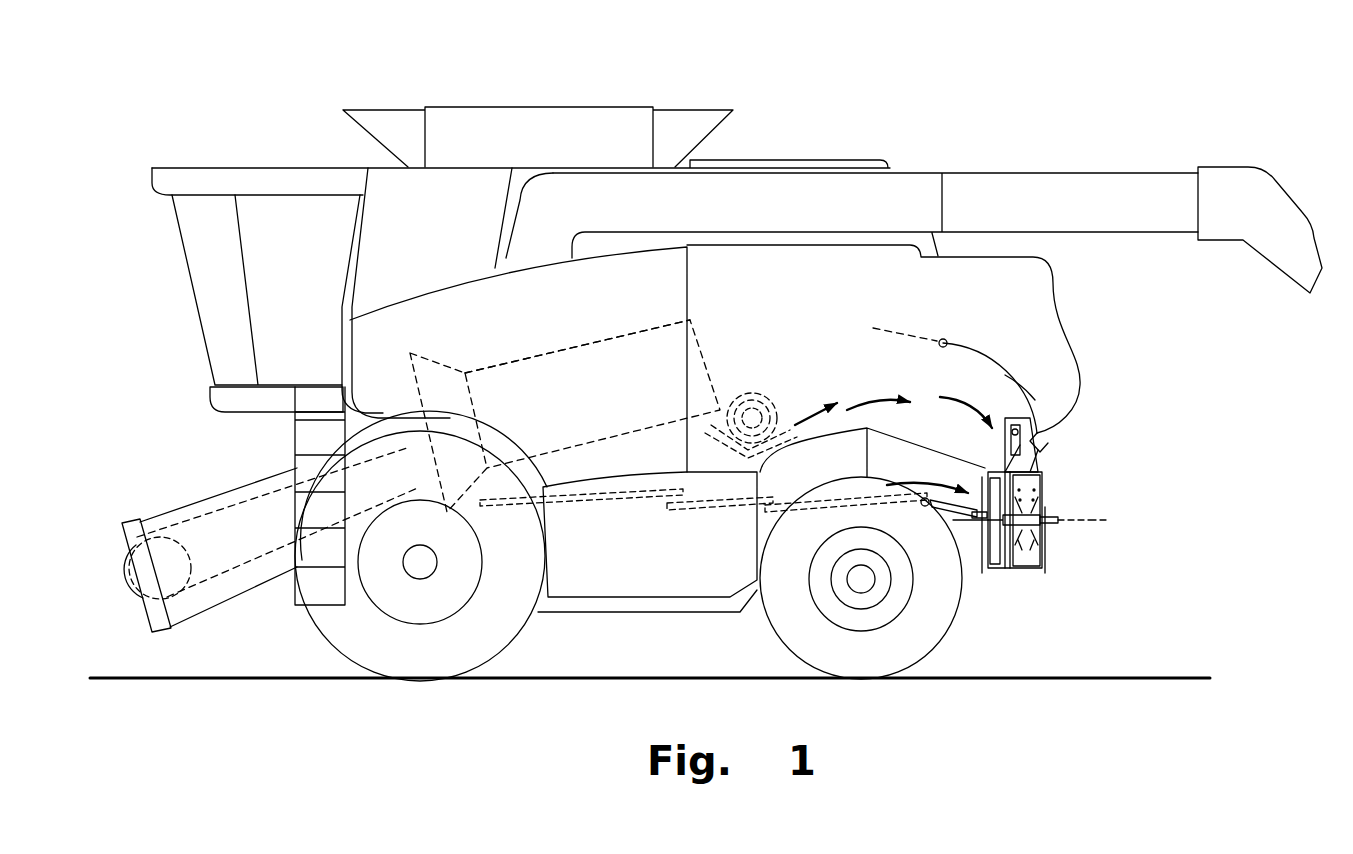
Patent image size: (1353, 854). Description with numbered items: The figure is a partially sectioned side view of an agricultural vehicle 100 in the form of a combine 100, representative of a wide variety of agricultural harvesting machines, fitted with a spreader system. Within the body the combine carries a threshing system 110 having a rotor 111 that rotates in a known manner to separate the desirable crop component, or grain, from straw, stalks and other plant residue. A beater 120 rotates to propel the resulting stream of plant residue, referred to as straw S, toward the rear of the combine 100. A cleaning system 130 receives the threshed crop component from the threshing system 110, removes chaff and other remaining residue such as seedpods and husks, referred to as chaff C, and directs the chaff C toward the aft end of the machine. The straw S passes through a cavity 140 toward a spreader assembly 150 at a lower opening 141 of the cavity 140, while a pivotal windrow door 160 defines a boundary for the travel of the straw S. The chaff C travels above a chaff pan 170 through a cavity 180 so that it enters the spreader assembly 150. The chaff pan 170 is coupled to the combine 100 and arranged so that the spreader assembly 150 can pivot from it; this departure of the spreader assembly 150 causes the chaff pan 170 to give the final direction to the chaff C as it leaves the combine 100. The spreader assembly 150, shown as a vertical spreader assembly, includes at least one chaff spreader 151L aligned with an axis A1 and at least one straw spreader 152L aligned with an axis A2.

The agricultural vehicle 100 is at (1020, 132).
The threshing system 110 is at (505, 352).
The rotor 111 is at (552, 358).
The beater 120 is at (745, 397).
The cleaning system 130 is at (740, 518).
The cavity 140 is at (903, 357).
The lower opening 141 is at (1018, 410).
The spreader assembly 150 is at (1065, 476).
The chaff spreader 151L is at (1001, 568).
The straw spreader 152L is at (1027, 568).
The pivotal windrow door 160 is at (1020, 383).
The chaff pan 170 is at (947, 513).
The cavity 180 is at (945, 470).
The straw S is at (807, 415).
The chaff C is at (925, 498).
The axis A1 is at (958, 552).
The axis A2 is at (1092, 522).